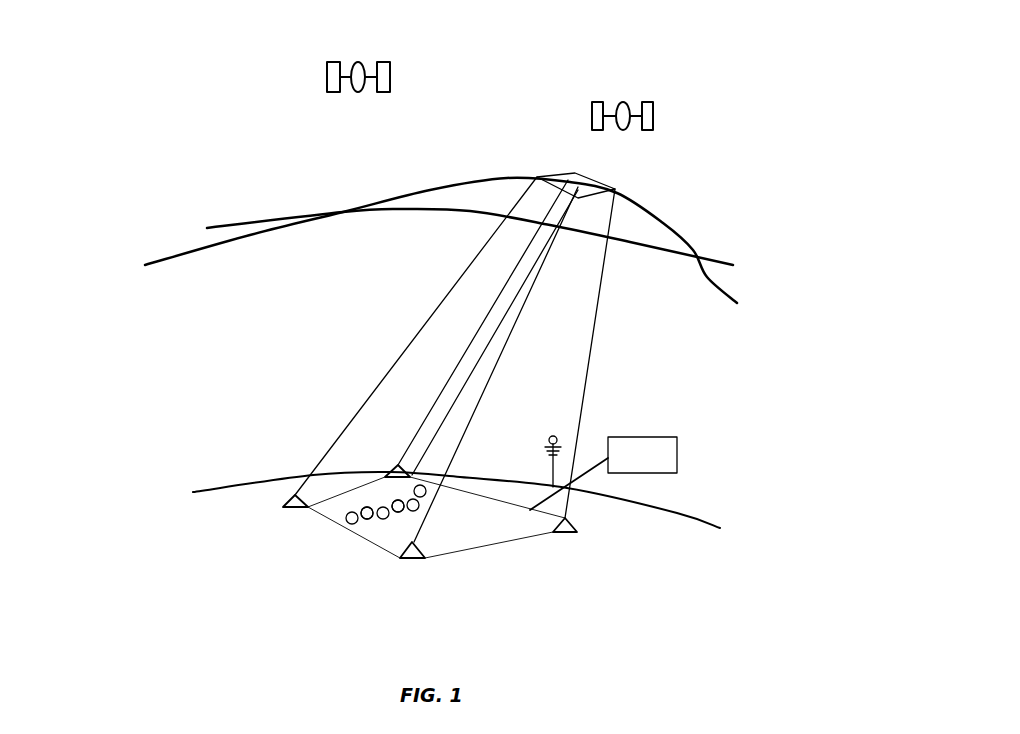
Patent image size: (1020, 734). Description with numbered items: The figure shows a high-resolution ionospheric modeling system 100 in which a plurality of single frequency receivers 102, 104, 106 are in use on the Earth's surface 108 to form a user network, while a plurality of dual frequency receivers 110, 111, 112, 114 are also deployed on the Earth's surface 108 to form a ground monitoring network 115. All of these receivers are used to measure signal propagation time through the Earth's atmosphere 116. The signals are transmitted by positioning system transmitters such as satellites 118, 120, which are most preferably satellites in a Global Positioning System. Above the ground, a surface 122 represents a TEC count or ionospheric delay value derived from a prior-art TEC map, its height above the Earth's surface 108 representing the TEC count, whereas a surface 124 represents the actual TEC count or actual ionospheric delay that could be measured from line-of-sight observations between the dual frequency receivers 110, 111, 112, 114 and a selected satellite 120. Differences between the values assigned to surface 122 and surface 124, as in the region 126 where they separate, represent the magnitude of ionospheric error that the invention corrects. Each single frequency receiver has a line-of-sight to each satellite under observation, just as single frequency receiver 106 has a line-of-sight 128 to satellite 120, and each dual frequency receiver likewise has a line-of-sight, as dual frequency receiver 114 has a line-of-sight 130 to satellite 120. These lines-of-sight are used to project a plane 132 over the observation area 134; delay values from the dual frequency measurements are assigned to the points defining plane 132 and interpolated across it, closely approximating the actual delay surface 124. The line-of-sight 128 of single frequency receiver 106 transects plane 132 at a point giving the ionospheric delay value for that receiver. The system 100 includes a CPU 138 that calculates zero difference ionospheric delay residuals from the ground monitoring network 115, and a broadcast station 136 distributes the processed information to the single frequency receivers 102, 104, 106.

The high-resolution ionospheric modeling system 100 is at (738, 216).
The single frequency receiver 102 is at (345, 522).
The single frequency receiver 104 is at (362, 519).
The single frequency receiver 106 is at (397, 513).
The Earth's surface 108 is at (557, 575).
The dual frequency receiver 110 is at (290, 497).
The dual frequency receiver 111 is at (415, 560).
The dual frequency receiver 112 is at (398, 464).
The dual frequency receiver 114 is at (582, 523).
The ground monitoring network 115 is at (677, 520).
The Earth's atmosphere 116 is at (262, 355).
The satellite 118 is at (360, 62).
The satellite 120 is at (627, 100).
The surface 122 is at (243, 224).
The surface 124 is at (165, 258).
The region 126 is at (480, 190).
The line-of-sight 128 is at (487, 353).
The line-of-sight 130 is at (590, 353).
The plane 132 is at (603, 187).
The observation area 134 is at (467, 505).
The broadcast station 136 is at (553, 436).
The CPU 138 is at (677, 448).